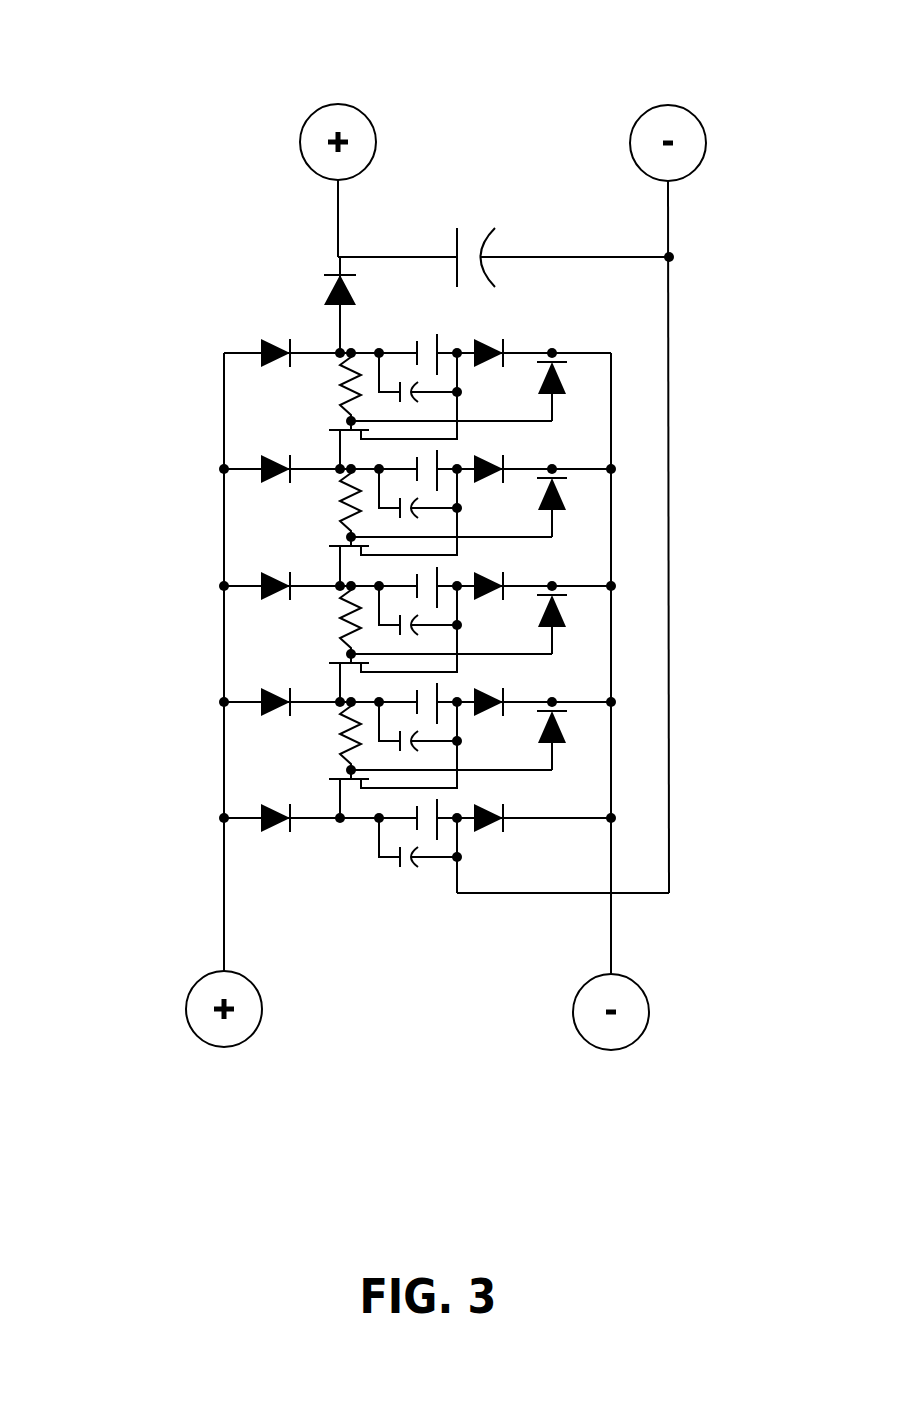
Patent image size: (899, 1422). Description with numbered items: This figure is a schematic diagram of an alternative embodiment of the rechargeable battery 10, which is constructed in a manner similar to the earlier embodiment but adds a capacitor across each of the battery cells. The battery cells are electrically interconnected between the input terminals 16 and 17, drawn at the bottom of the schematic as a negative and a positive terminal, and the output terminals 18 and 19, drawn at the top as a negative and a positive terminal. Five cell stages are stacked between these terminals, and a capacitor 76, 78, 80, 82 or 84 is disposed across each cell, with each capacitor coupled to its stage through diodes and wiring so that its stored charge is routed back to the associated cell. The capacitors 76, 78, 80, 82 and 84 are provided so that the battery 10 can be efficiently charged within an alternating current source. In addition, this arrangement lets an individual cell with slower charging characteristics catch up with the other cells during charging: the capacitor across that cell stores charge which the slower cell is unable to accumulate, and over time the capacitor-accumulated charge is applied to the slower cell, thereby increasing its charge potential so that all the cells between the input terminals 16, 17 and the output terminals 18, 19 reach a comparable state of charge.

The rechargeable battery 10 is at (128, 80).
The input terminal 16 is at (649, 1012).
The input terminal 17 is at (262, 1009).
The output terminal 18 is at (706, 143).
The output terminal 19 is at (378, 142).
The capacitor 76 is at (415, 854).
The capacitor 78 is at (415, 738).
The capacitor 80 is at (415, 622).
The capacitor 82 is at (415, 505).
The capacitor 84 is at (415, 389).